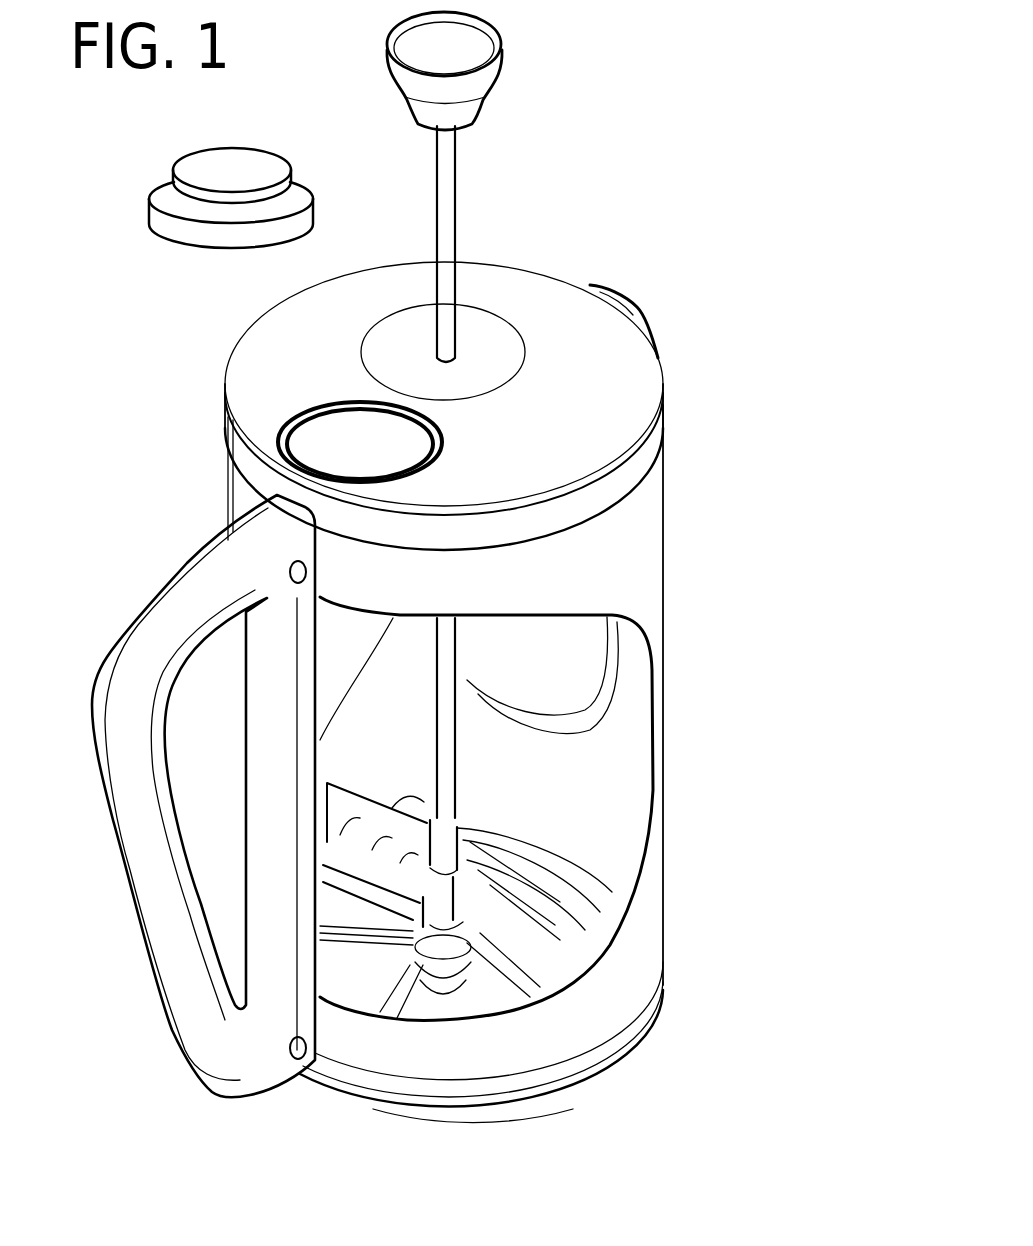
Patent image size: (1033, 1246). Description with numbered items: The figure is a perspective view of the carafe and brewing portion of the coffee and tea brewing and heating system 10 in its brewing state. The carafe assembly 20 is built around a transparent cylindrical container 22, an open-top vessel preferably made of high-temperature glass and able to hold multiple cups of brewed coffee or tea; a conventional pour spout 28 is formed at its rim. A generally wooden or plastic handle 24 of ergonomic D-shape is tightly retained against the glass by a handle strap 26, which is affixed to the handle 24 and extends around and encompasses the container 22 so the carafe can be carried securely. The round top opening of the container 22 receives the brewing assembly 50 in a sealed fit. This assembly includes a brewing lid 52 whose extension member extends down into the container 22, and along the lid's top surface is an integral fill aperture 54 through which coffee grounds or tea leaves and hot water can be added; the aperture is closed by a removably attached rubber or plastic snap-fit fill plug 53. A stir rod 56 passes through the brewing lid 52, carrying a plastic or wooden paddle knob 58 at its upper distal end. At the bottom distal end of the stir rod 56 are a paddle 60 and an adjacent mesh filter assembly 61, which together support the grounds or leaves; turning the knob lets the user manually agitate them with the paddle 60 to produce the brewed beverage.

The system 10 is at (596, 228).
The carafe assembly 20 is at (683, 593).
The transparent cylindrical container 22 is at (570, 1073).
The handle 24 is at (155, 600).
The handle strap 26 is at (610, 602).
The pour spout 28 is at (628, 290).
The brewing assembly 50 is at (620, 376).
The brewing lid 52 is at (575, 447).
The fill plug 53 is at (292, 192).
The fill aperture 54 is at (300, 405).
The stir rod 56 is at (457, 762).
The paddle knob 58 is at (505, 50).
The paddle 60 is at (560, 930).
The mesh filter assembly 61 is at (382, 999).